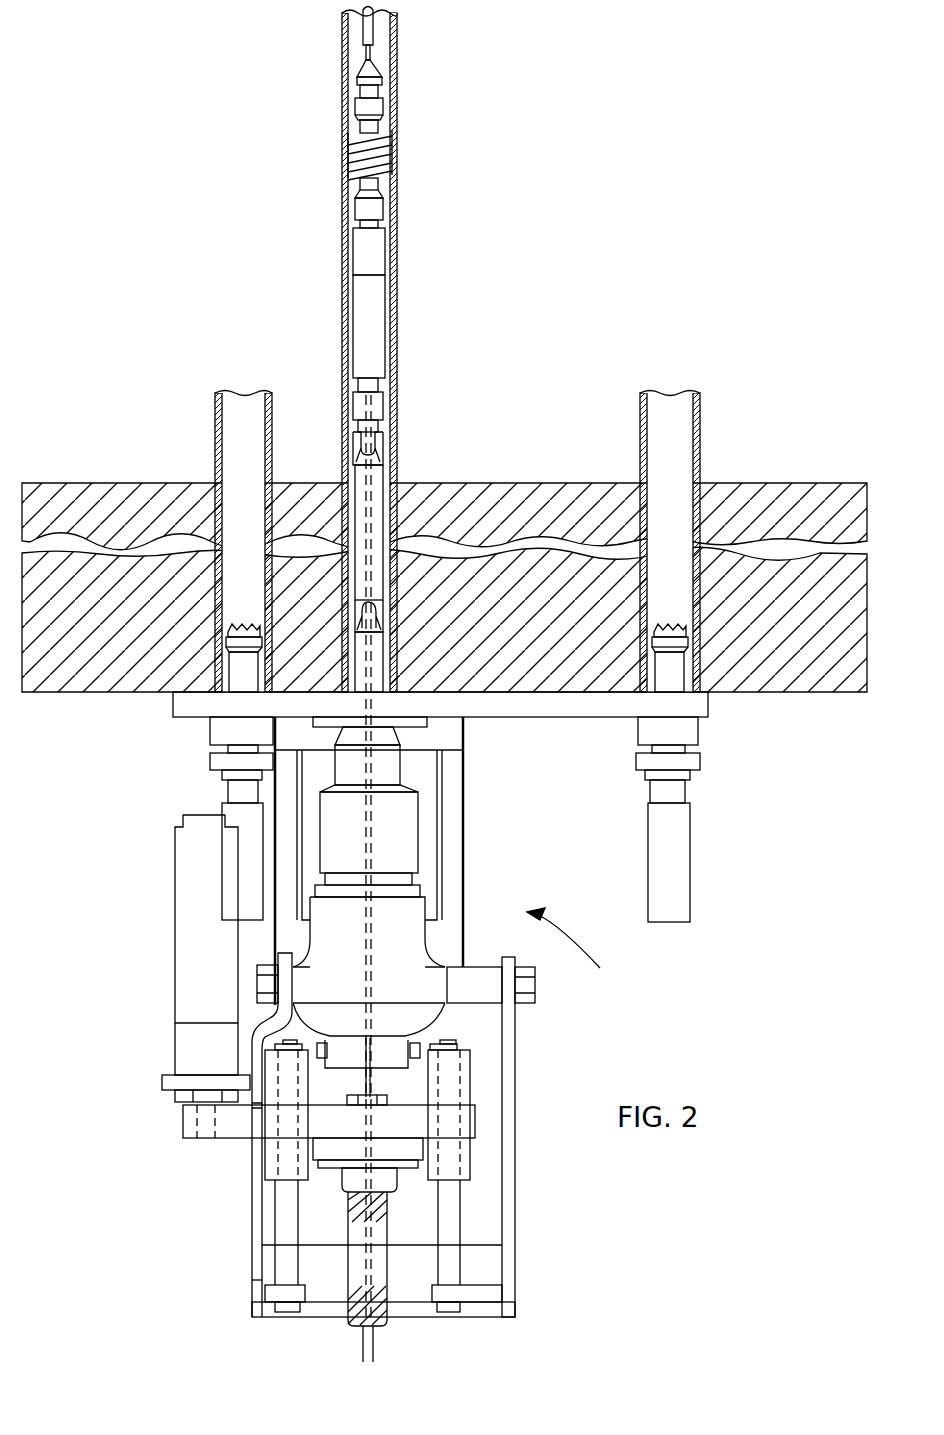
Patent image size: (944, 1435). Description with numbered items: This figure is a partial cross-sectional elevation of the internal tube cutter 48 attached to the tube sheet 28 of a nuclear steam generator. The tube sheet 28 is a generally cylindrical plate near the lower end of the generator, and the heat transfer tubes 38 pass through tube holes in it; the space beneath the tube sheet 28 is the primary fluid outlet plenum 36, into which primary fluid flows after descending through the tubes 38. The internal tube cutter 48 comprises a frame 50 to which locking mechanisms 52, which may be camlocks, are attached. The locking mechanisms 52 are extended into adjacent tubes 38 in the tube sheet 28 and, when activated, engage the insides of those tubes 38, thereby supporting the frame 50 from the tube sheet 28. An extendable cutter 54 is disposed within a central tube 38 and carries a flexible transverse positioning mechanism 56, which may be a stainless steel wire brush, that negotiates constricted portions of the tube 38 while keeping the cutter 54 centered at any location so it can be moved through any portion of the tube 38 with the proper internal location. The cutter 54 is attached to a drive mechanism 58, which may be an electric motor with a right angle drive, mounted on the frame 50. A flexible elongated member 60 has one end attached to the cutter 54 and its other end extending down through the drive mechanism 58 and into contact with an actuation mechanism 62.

The tube sheet 28 is at (62, 493).
The primary fluid outlet plenum 36 is at (766, 912).
The tubes 38 is at (345, 266).
The internal tube cutter 48 is at (617, 998).
The frame 50 is at (452, 774).
The locking mechanisms 52 is at (222, 727).
The extendable cutter 54 is at (380, 318).
The flexible transverse positioning mechanism 56 is at (385, 160).
The drive mechanism 58 is at (410, 845).
The flexible elongated member 60 is at (372, 497).
The actuation mechanism 62 is at (333, 1120).